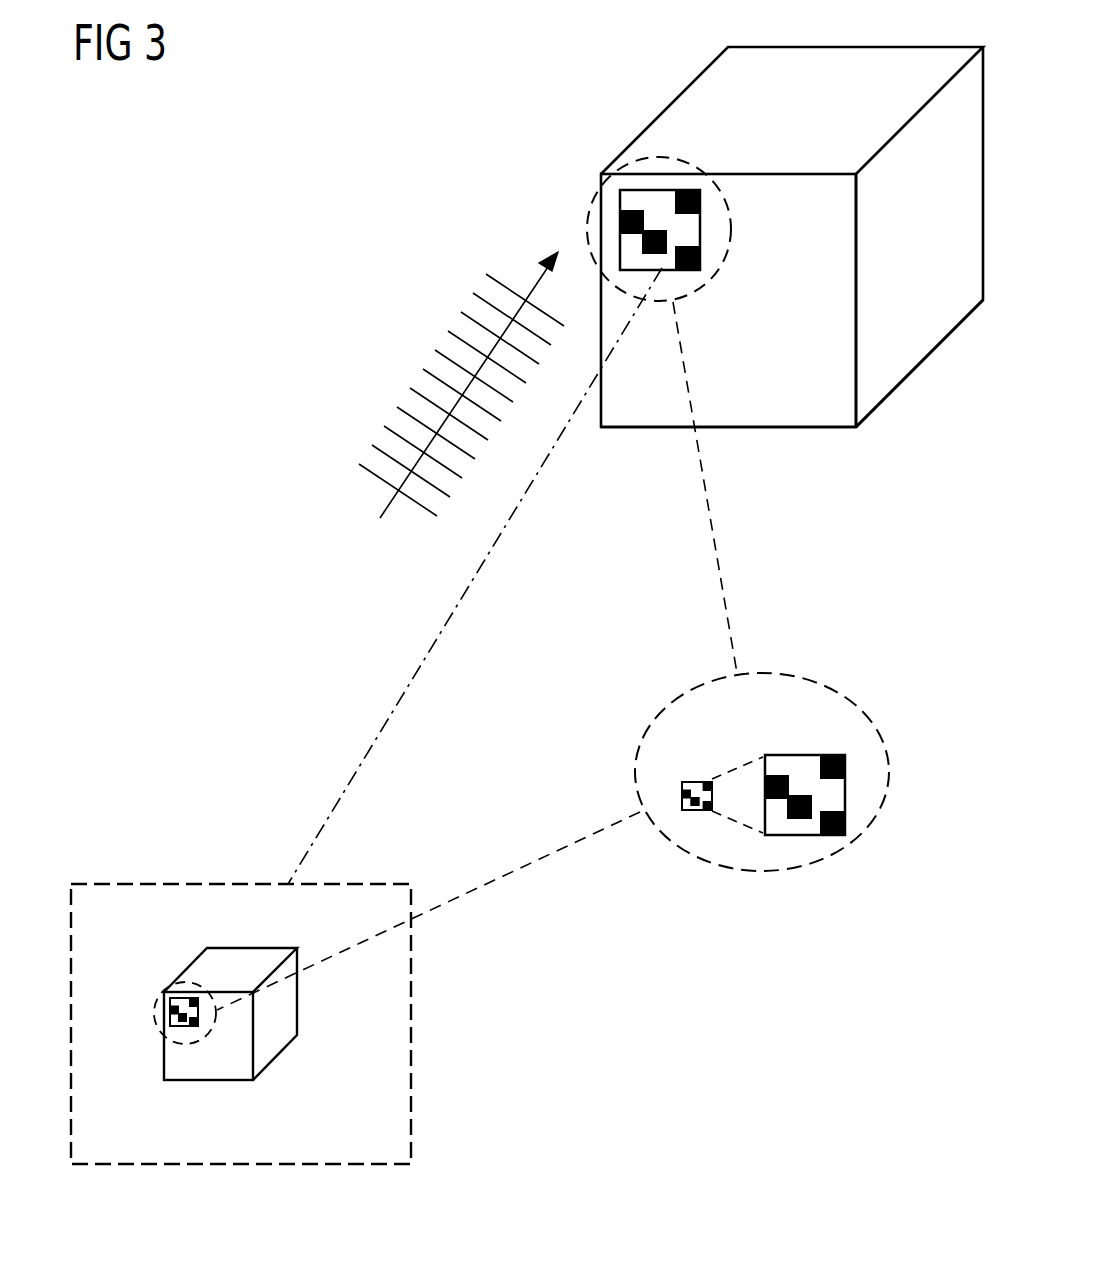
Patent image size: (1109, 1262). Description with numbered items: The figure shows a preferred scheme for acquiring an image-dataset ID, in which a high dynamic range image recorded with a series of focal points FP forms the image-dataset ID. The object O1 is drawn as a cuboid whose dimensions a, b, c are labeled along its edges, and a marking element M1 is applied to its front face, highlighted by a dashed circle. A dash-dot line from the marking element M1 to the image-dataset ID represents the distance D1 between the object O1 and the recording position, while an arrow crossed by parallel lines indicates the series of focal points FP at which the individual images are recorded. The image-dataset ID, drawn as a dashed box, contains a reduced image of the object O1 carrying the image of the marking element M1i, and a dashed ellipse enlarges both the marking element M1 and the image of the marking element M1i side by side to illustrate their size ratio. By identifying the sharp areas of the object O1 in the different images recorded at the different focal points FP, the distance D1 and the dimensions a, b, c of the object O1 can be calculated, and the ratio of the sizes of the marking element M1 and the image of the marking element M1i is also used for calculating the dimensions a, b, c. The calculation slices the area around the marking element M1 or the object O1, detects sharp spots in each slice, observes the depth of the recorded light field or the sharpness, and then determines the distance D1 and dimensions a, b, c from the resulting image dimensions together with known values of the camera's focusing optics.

The object O1 is at (710, 80).
The marking element M1 is at (700, 223).
The image of the marking element M1i is at (689, 782).
The image-dataset ID is at (411, 1020).
The distance D1 is at (468, 583).
The focal points FP is at (397, 373).
The dimension a is at (728, 406).
The dimension b is at (871, 300).
The dimension c is at (919, 363).